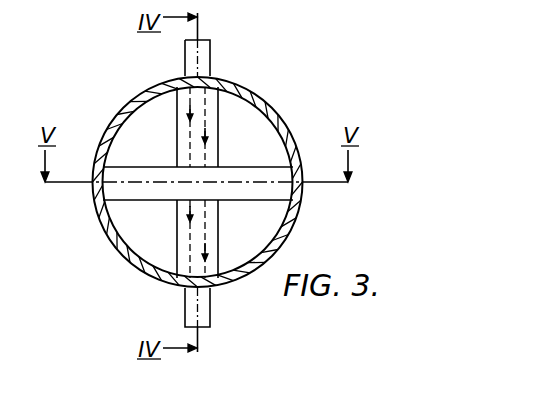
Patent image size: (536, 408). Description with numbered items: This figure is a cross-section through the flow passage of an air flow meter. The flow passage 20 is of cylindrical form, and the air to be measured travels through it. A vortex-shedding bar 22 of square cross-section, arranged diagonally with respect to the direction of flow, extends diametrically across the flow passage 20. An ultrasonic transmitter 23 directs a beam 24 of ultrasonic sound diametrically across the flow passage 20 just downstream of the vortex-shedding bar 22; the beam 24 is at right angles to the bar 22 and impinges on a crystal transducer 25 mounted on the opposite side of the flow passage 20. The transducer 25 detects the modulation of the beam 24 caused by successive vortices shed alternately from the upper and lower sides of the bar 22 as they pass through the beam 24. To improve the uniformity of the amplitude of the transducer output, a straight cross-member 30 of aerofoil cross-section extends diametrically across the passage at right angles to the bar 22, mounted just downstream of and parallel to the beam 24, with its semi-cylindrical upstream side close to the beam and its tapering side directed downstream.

The flow passage 20 is at (272, 100).
The vortex-shedding bar 22 is at (147, 165).
The ultrasonic transmitter 23 is at (212, 53).
The ultrasonic beam 24 is at (190, 221).
The crystal transducer 25 is at (212, 312).
The cross-member 30 is at (218, 133).